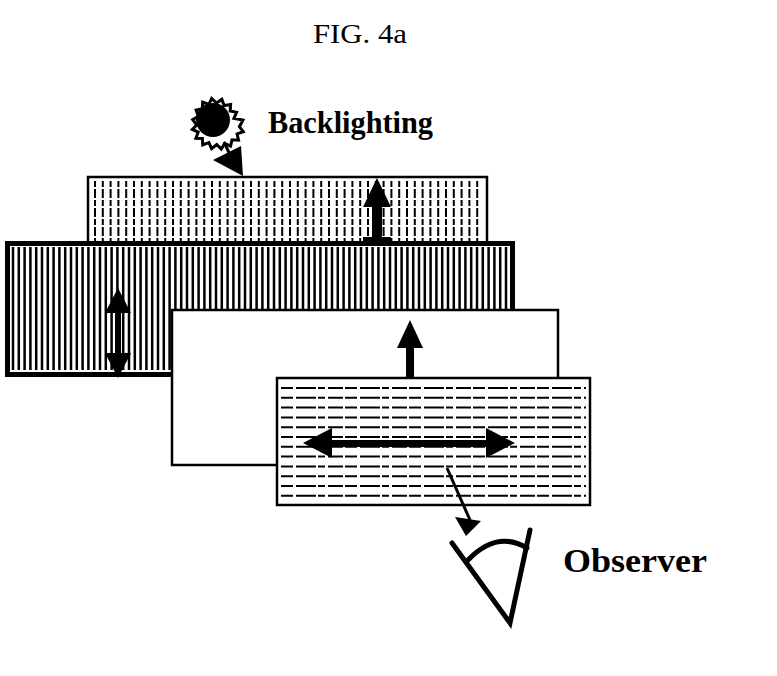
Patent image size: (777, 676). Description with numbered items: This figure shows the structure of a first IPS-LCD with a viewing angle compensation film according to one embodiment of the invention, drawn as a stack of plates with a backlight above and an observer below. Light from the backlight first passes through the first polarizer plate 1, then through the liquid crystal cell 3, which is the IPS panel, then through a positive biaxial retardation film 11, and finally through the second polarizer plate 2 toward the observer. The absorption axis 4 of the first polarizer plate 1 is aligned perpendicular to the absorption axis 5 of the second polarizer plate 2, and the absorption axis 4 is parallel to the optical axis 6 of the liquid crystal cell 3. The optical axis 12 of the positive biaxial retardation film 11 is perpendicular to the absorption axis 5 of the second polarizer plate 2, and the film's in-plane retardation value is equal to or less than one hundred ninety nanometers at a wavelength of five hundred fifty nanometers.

The first polarizer plate 1 is at (287, 211).
The second polarizer plate 2 is at (433, 441).
The liquid crystal cell 3 is at (260, 309).
The absorption axis of the first polarizer plate 4 is at (409, 211).
The absorption axis of the second polarizer plate 5 is at (405, 462).
The optical axis of the liquid crystal cell 6 is at (83, 333).
The positive biaxial retardation film 11 is at (365, 387).
The optical axis of the positive biaxial retardation film 12 is at (451, 349).